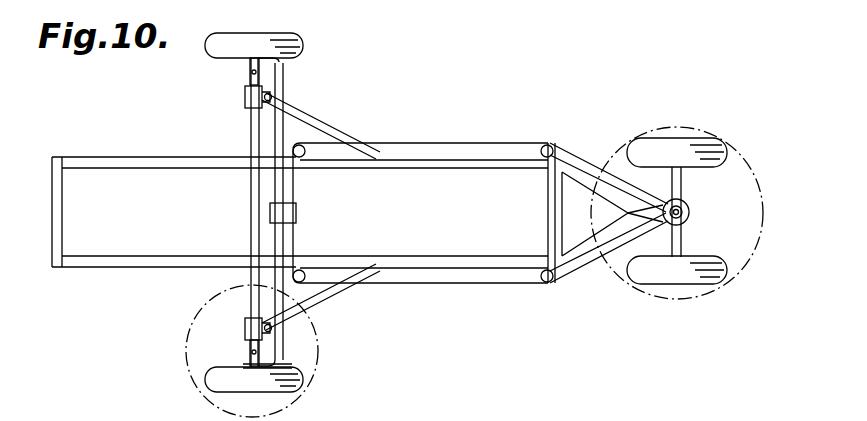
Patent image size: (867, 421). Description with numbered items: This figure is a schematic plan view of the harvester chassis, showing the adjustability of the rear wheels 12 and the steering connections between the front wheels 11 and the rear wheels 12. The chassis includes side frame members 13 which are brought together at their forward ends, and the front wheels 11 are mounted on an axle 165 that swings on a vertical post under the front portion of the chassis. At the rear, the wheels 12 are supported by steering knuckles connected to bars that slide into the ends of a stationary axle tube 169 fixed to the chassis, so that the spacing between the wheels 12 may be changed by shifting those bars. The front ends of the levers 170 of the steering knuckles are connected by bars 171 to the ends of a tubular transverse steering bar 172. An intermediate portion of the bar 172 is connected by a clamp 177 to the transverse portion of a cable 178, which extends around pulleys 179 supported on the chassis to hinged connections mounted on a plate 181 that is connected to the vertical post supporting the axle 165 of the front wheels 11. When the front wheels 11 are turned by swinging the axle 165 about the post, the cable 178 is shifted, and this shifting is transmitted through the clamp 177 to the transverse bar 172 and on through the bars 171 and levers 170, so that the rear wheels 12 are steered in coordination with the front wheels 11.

The front wheels 11 is at (181, 341).
The rear wheels 12 is at (298, 47).
The side frame members 13 is at (467, 168).
The axle 165 is at (682, 237).
The stationary axle tube 169 is at (251, 196).
The levers 170 is at (290, 366).
The bars 171 is at (284, 350).
The tubular transverse steering bar 172 is at (258, 120).
The clamp 177 is at (296, 215).
The cable 178 is at (440, 143).
The pulleys 179 is at (333, 130).
The plate 181 is at (688, 208).